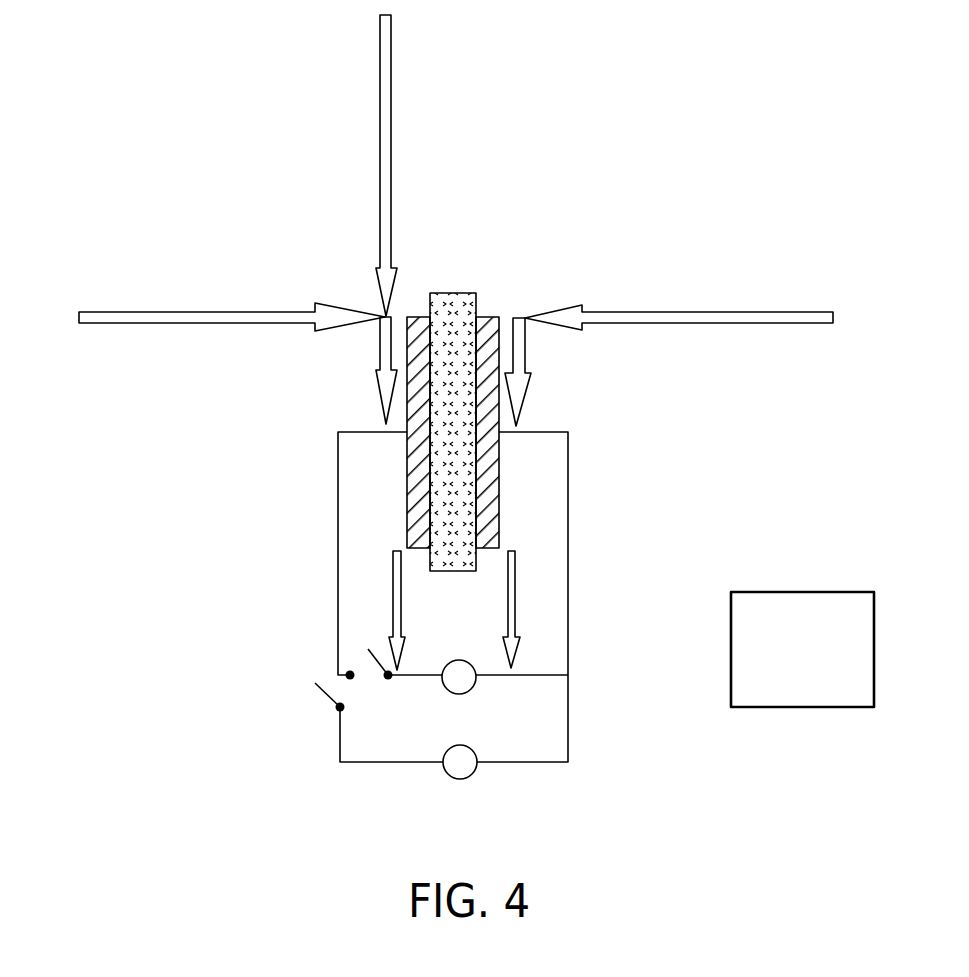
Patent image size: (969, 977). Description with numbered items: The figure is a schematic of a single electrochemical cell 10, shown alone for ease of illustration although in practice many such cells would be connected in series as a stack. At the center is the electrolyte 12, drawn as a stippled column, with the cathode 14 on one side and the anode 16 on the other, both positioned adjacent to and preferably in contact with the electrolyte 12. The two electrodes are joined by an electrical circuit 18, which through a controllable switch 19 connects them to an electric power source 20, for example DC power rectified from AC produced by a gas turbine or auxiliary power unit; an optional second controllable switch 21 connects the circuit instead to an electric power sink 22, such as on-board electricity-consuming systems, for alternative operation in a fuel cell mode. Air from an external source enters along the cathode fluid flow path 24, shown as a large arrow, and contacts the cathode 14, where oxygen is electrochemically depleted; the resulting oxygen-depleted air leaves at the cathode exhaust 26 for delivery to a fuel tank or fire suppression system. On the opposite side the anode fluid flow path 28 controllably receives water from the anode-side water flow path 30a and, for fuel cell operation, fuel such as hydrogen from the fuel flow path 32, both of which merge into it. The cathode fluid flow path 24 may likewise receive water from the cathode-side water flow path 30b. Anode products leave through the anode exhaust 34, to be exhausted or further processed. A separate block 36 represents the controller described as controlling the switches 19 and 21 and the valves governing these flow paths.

The electrochemical cell 10 is at (728, 195).
The electrolyte 12 is at (450, 293).
The cathode 14 is at (490, 549).
The anode 16 is at (418, 549).
The electrical circuit 18 is at (545, 430).
The controllable switch 19 is at (388, 680).
The electric power source 20 is at (465, 693).
The controllable switch 21 is at (337, 707).
The electric power sink 22 is at (474, 772).
The cathode fluid flow path 24 is at (525, 351).
The cathode exhaust 26 is at (515, 613).
The anode fluid flow path 28 is at (380, 352).
The anode-side water flow path 30a is at (193, 325).
The cathode-side water flow path 30b is at (695, 325).
The fuel flow path 32 is at (380, 43).
The anode exhaust 34 is at (393, 602).
The controller 36 is at (828, 708).